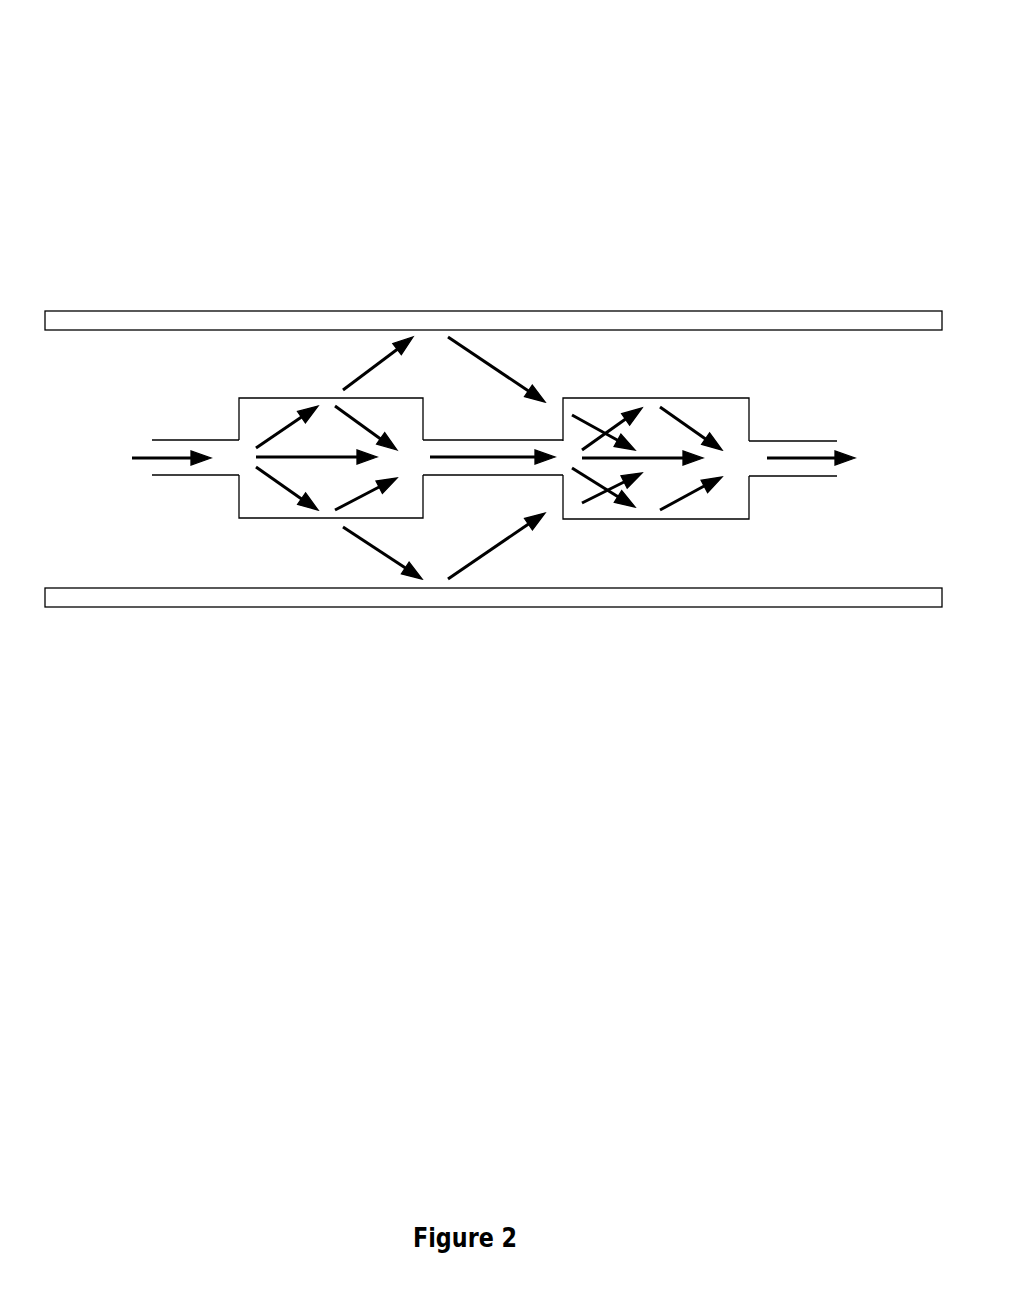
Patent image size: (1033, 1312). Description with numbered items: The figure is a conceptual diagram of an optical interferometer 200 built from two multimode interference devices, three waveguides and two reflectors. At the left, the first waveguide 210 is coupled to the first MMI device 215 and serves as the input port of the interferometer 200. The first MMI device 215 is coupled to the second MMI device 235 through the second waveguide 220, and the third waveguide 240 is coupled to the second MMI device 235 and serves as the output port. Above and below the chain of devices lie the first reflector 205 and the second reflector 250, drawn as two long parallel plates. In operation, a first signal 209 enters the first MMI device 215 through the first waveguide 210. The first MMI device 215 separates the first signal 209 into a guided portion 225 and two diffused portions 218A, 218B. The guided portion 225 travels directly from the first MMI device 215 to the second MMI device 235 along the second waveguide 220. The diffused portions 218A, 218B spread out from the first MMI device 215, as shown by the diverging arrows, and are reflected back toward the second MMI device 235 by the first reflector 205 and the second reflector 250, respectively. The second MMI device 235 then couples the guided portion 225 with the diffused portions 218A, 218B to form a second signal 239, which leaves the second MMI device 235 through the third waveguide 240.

The interferometer 200 is at (449, 190).
The first reflector 205 is at (80, 330).
The first signal 209 is at (174, 455).
The first waveguide 210 is at (168, 476).
The first MMI device 215 is at (256, 519).
The diffused portion 218A is at (367, 362).
The diffused portion 218B is at (378, 553).
The second waveguide 220 is at (449, 440).
The guided portion 225 is at (470, 460).
The second MMI device 235 is at (713, 519).
The second signal 239 is at (803, 456).
The third waveguide 240 is at (808, 478).
The second reflector 250 is at (122, 607).